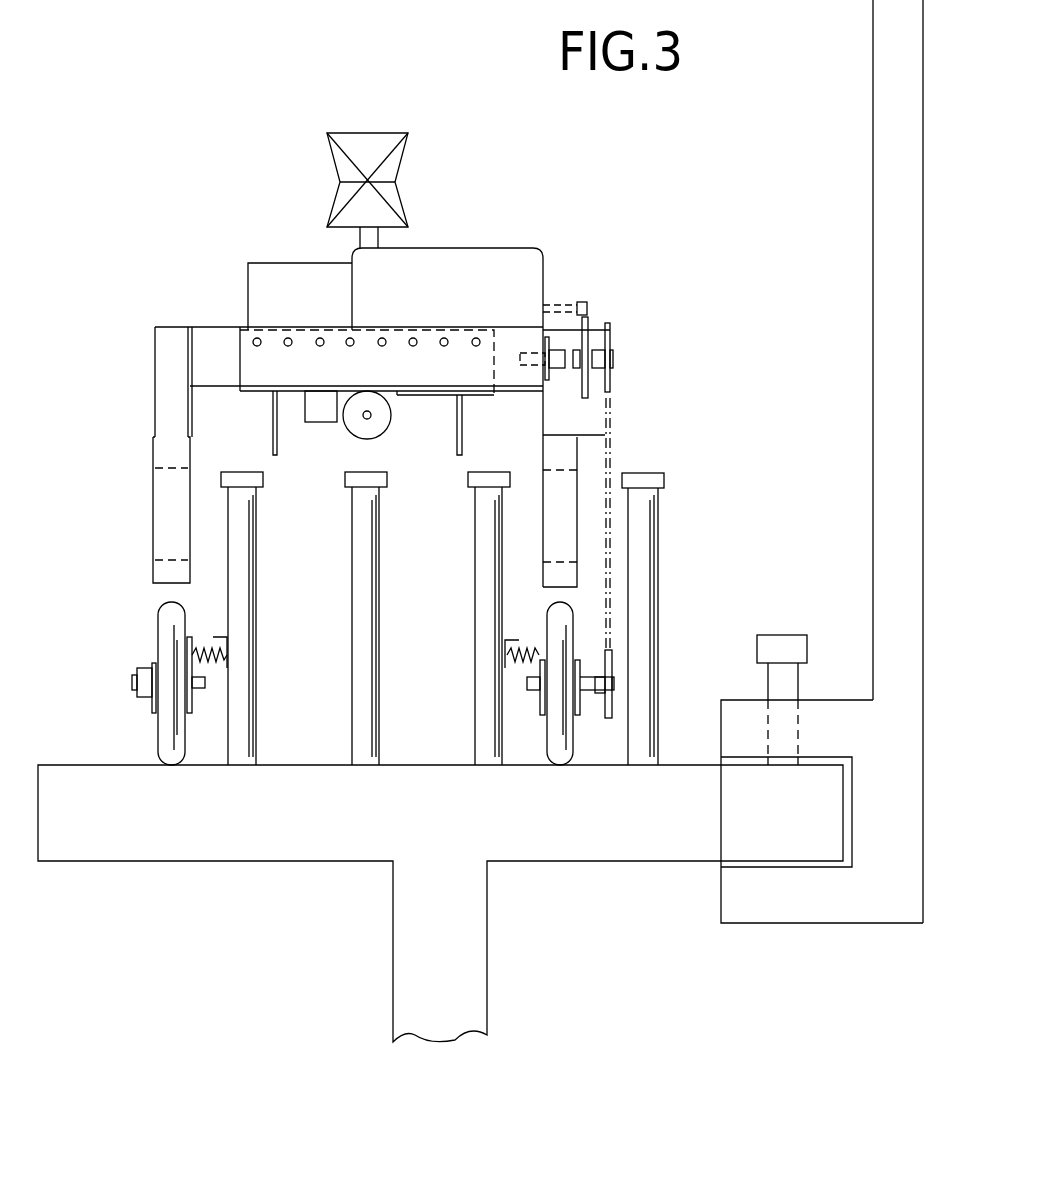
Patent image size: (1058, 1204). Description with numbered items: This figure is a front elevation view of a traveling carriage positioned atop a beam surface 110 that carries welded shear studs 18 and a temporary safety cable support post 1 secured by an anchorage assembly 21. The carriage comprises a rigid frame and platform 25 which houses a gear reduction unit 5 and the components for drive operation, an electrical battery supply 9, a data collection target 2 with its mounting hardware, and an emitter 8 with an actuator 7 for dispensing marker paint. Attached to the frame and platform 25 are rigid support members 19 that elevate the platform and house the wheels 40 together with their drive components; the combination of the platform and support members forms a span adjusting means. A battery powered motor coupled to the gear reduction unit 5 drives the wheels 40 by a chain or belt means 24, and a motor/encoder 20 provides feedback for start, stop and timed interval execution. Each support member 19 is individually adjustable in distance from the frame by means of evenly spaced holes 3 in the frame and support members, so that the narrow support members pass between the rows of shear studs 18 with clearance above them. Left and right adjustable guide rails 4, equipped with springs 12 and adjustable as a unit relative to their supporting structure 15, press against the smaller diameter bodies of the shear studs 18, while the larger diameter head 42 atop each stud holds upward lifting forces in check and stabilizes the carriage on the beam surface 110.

The temporary safety cable support post 1 is at (873, 160).
The data collection target 2 is at (337, 133).
The evenly spaced holes 3 is at (285, 342).
The adjustable guide rails 4 is at (507, 640).
The gear reduction unit 5 is at (527, 248).
The actuator 7 is at (314, 424).
The emitter 8 is at (371, 416).
The electrical battery supply 9 is at (265, 263).
The springs 12 is at (205, 640).
The supporting structure 15 is at (195, 665).
The shear studs 18 is at (475, 610).
The rigid support members 19 is at (155, 420).
The motor/encoder 20 is at (150, 665).
The anchorage assembly 21 is at (797, 907).
The chain or belt means 24 is at (608, 462).
The frame and platform 25 is at (462, 418).
The wheels 40 is at (172, 745).
The head 42 is at (665, 483).
The beam surface 110 is at (470, 945).